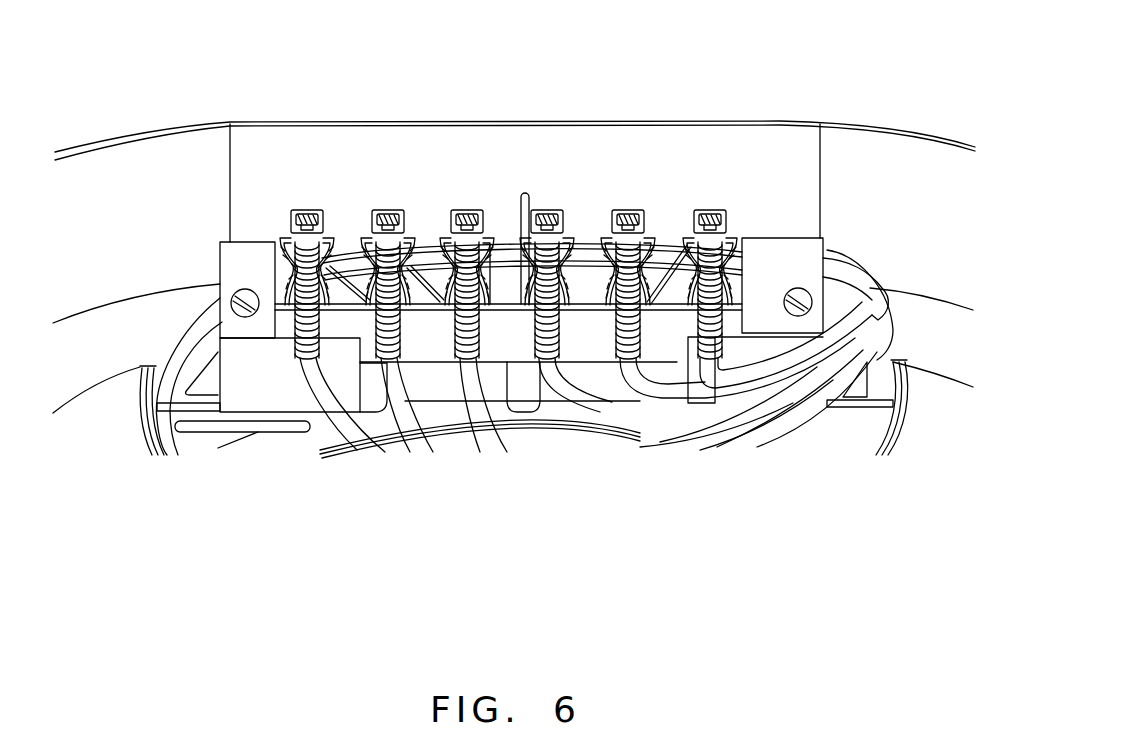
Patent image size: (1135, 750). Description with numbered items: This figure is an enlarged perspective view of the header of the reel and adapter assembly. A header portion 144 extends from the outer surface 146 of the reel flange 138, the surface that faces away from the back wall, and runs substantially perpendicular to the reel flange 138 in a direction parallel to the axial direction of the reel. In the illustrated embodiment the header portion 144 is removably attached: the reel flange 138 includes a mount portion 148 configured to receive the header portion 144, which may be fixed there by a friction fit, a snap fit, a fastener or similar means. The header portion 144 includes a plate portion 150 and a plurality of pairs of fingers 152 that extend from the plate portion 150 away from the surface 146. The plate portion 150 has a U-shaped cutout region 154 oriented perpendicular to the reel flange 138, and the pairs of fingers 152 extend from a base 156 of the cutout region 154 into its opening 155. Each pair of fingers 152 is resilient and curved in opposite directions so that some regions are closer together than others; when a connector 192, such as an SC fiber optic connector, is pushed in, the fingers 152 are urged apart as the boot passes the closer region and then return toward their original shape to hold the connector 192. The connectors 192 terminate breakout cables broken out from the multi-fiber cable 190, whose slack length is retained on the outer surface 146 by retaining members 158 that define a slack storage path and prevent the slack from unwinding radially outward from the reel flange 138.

The reel flange 138 is at (185, 350).
The connector 192 is at (410, 218).
The header portion 144 is at (767, 228).
The U-shaped cutout region 154 is at (586, 297).
The pairs of fingers 152 is at (330, 250).
The opening 155 is at (282, 262).
The retaining members 158 is at (137, 380).
The multi-fiber cable 190 is at (167, 450).
The outer surface 146 is at (203, 420).
The mount portion 148 is at (277, 397).
The plate portion 150 is at (508, 345).
The base 156 is at (665, 318).